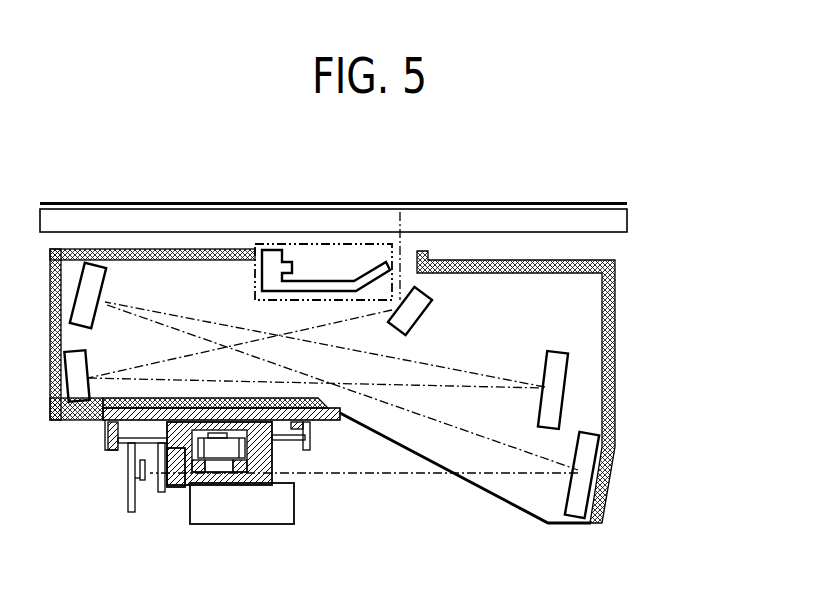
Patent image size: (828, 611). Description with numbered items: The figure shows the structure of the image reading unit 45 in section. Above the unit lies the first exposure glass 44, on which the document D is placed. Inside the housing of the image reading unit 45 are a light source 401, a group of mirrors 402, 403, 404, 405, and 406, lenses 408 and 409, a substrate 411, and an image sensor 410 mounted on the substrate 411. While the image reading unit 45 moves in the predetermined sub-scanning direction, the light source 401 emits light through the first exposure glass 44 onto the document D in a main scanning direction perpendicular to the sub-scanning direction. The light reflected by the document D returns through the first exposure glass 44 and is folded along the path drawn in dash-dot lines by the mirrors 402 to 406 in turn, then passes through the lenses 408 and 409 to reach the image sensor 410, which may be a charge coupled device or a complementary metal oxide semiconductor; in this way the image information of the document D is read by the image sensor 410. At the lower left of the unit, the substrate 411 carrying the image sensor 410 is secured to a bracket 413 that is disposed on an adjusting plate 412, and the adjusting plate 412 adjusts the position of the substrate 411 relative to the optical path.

The first exposure glass 44 is at (181, 218).
The document D is at (470, 203).
The image reading unit 45 is at (636, 346).
The light source 401 is at (340, 244).
The mirror 402 is at (432, 298).
The mirror 403 is at (92, 363).
The mirror 404 is at (543, 388).
The mirror 405 is at (100, 299).
The mirror 406 is at (574, 519).
The lens 408 is at (262, 526).
The lens 409 is at (176, 493).
The image sensor 410 is at (142, 486).
The substrate 411 is at (128, 492).
The adjusting plate 412 is at (288, 443).
The bracket 413 is at (118, 452).